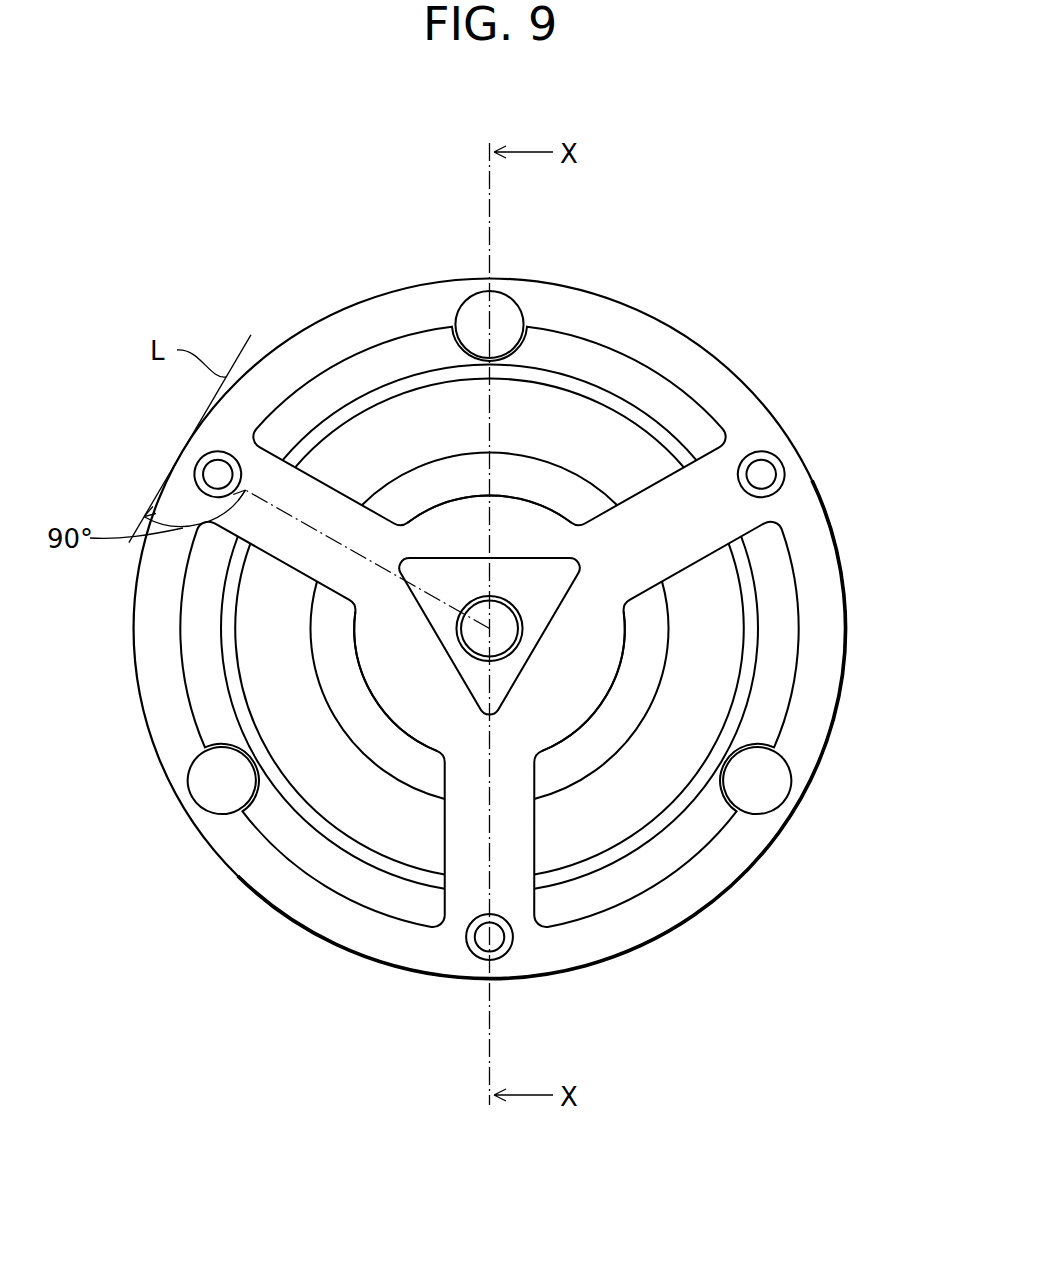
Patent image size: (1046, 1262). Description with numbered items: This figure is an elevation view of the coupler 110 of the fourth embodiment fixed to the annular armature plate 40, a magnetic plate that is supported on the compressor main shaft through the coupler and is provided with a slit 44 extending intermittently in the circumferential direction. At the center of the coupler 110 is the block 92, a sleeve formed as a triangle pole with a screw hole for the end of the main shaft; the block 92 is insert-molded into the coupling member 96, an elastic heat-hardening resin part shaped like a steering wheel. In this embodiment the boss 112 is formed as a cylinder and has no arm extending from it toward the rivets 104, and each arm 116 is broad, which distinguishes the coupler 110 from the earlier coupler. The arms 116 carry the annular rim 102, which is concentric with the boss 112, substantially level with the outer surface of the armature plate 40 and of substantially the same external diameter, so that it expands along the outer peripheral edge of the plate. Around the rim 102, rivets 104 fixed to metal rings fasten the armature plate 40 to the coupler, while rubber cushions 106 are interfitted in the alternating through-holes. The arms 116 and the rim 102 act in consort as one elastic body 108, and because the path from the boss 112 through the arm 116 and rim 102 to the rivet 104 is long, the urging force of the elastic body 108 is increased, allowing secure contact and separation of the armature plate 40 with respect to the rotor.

The armature plate 40 is at (765, 587).
The slit 44 is at (327, 827).
The block 92 is at (545, 617).
The coupling member 96 is at (771, 387).
The rim 102 is at (820, 655).
The rivets 104 is at (477, 312).
The rubber cushions 106 is at (200, 470).
The elastic body 108 is at (851, 733).
The coupler 110 is at (765, 296).
The boss 112 is at (563, 707).
The arm 116 is at (310, 490).